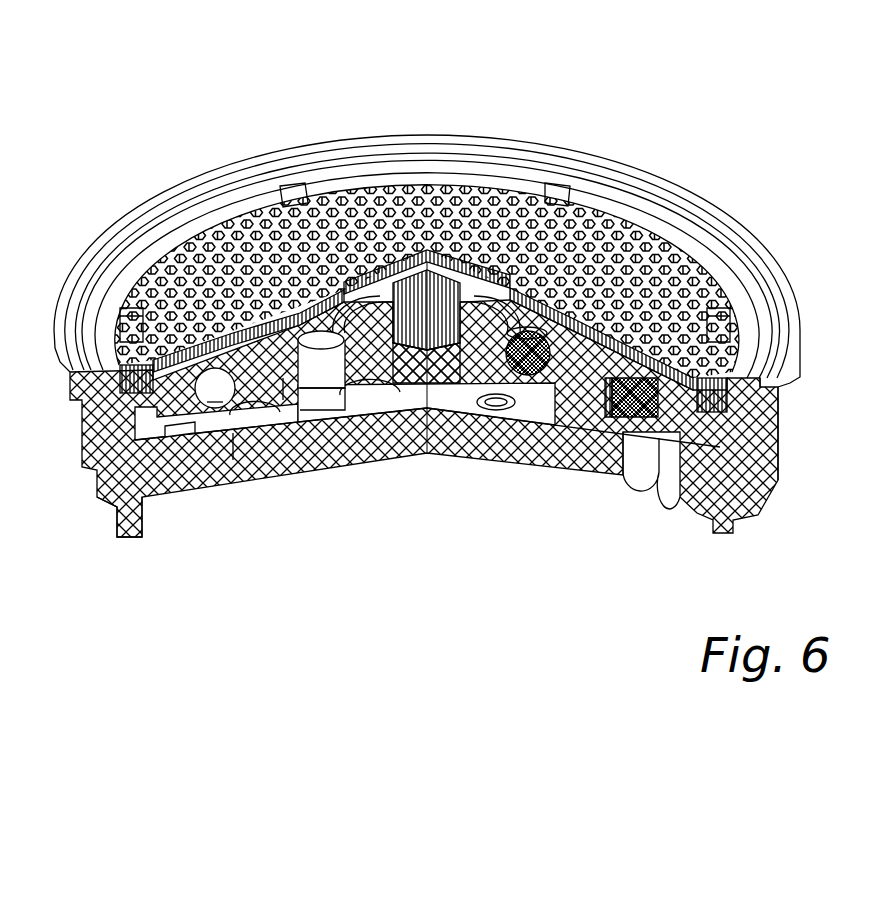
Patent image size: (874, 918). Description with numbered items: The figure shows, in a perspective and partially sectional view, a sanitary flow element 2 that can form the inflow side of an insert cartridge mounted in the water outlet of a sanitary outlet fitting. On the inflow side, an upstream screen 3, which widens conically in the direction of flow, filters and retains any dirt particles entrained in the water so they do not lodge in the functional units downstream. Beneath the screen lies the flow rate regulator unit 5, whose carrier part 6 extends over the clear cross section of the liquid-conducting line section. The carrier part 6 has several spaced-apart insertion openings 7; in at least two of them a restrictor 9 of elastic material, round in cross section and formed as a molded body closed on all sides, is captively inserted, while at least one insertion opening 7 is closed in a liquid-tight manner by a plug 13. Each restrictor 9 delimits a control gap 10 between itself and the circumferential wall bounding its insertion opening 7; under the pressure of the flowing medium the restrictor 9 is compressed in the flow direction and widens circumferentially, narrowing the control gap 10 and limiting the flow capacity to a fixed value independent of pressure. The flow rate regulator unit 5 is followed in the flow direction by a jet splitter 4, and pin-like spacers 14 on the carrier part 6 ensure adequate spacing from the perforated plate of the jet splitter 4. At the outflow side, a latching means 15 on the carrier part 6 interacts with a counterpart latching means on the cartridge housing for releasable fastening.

The flow element 2 is at (727, 102).
The inflow-side upstream screen 3 is at (465, 252).
The jet splitter 4 is at (468, 445).
The flow rate regulator unit 5 is at (375, 372).
The carrier part 6 is at (420, 392).
The insertion openings 7 is at (233, 437).
The restrictor 9 is at (530, 394).
The control gap 10 is at (240, 358).
The plug 13 is at (630, 426).
The spacers 14 is at (323, 412).
The latching means 15 is at (104, 500).